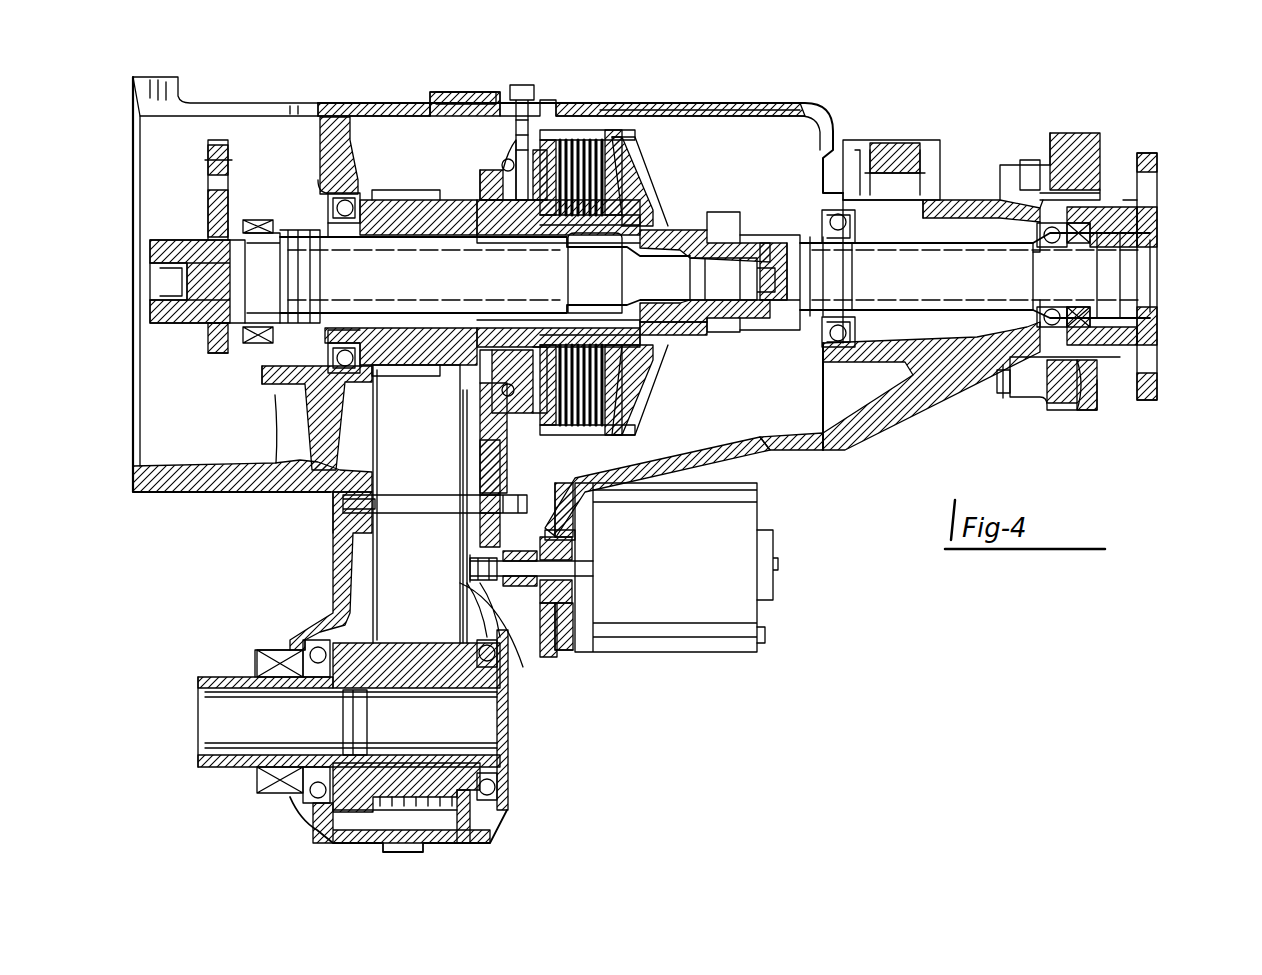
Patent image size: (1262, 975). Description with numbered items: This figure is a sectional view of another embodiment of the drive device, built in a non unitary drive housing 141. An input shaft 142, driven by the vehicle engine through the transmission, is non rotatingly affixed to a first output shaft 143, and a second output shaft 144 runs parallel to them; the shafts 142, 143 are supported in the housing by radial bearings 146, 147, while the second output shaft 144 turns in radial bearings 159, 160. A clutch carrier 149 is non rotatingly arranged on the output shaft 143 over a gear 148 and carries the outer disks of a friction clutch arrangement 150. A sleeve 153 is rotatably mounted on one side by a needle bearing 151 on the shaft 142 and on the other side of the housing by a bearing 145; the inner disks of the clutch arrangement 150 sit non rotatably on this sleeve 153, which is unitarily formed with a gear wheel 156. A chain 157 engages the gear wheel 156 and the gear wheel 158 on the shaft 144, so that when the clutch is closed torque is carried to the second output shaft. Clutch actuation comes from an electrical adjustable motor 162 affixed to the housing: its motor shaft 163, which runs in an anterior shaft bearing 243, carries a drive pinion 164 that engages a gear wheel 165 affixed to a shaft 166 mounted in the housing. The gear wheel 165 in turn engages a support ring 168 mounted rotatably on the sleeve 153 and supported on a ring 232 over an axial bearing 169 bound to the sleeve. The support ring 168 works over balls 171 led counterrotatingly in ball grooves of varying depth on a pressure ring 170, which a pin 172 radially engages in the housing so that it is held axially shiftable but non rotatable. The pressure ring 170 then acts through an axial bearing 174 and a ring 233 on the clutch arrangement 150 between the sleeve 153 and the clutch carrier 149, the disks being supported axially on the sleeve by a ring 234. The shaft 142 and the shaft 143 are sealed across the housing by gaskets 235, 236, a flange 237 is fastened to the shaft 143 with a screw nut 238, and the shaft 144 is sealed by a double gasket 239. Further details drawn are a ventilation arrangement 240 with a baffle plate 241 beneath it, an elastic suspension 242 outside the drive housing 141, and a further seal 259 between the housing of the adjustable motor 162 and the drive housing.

The drive housing 141 is at (315, 110).
The input shaft 142 is at (258, 282).
The first output shaft 143 is at (728, 244).
The second output shaft 144 is at (317, 820).
The bearing 145 is at (322, 190).
The radial bearing 146 is at (855, 240).
The radial bearing 147 is at (1020, 250).
The gear 148 is at (688, 230).
The clutch carrier 149 is at (660, 220).
The friction clutch arrangement 150 is at (618, 132).
The needle bearing 151 is at (655, 345).
The sleeve 153 is at (434, 383).
The gear wheel 156 is at (410, 198).
The chain 157 is at (397, 570).
The gear wheel 158 is at (403, 850).
The radial bearing 159 is at (297, 817).
The radial bearing 160 is at (510, 810).
The electrical adjustable motor 162 is at (730, 600).
The motor shaft 163 is at (563, 570).
The drive pinion 164 is at (503, 590).
The gear wheel 165 is at (563, 647).
The shaft 166 is at (398, 510).
The support ring 168 is at (530, 100).
The axial bearing 169 is at (500, 150).
The pressure ring 170 is at (470, 232).
The balls 171 is at (503, 397).
The pin 172 is at (512, 236).
The axial bearing 174 is at (575, 135).
The ring 232 is at (470, 100).
The ring 233 is at (507, 397).
The ring 234 is at (676, 108).
The gasket 235 is at (222, 200).
The gasket 236 is at (1080, 413).
The flange 237 is at (1152, 400).
The screw nut 238 is at (1152, 237).
The double gasket 239 is at (257, 797).
The ventilation arrangement 240 is at (935, 146).
The baffle plate 241 is at (846, 152).
The elastic suspension 242 is at (1080, 165).
The anterior shaft bearing 243 is at (543, 587).
The seal 259 is at (575, 532).